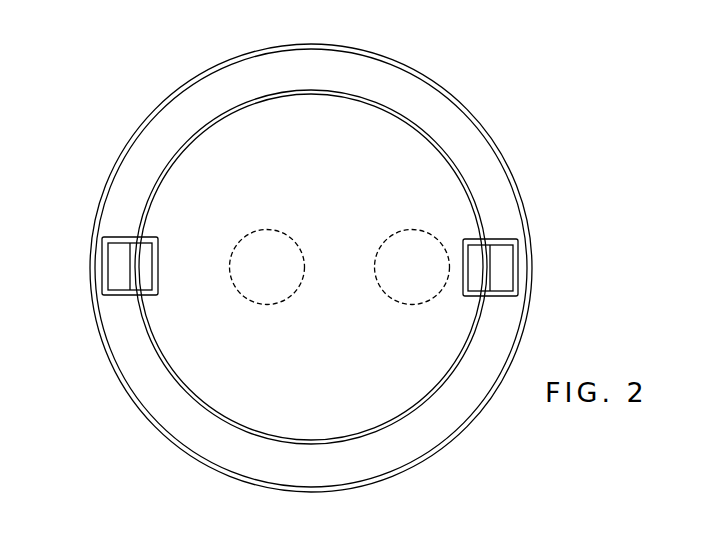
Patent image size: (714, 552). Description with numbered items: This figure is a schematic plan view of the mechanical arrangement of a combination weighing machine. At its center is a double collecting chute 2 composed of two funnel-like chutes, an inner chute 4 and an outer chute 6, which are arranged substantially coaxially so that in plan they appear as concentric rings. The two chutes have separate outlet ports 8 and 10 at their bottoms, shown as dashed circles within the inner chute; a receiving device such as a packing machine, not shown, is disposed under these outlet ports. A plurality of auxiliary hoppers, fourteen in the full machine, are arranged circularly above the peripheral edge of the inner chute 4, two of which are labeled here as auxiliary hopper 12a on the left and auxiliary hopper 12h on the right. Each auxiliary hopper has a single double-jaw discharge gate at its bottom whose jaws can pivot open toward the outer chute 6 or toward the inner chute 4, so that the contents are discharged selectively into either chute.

The double collecting chute 2 is at (314, 263).
The inner chute 4 is at (435, 167).
The outer chute 6 is at (430, 94).
The outlet port 8 is at (419, 277).
The outlet port 10 is at (278, 277).
The auxiliary hopper 12a is at (117, 263).
The auxiliary hopper 12h is at (505, 272).